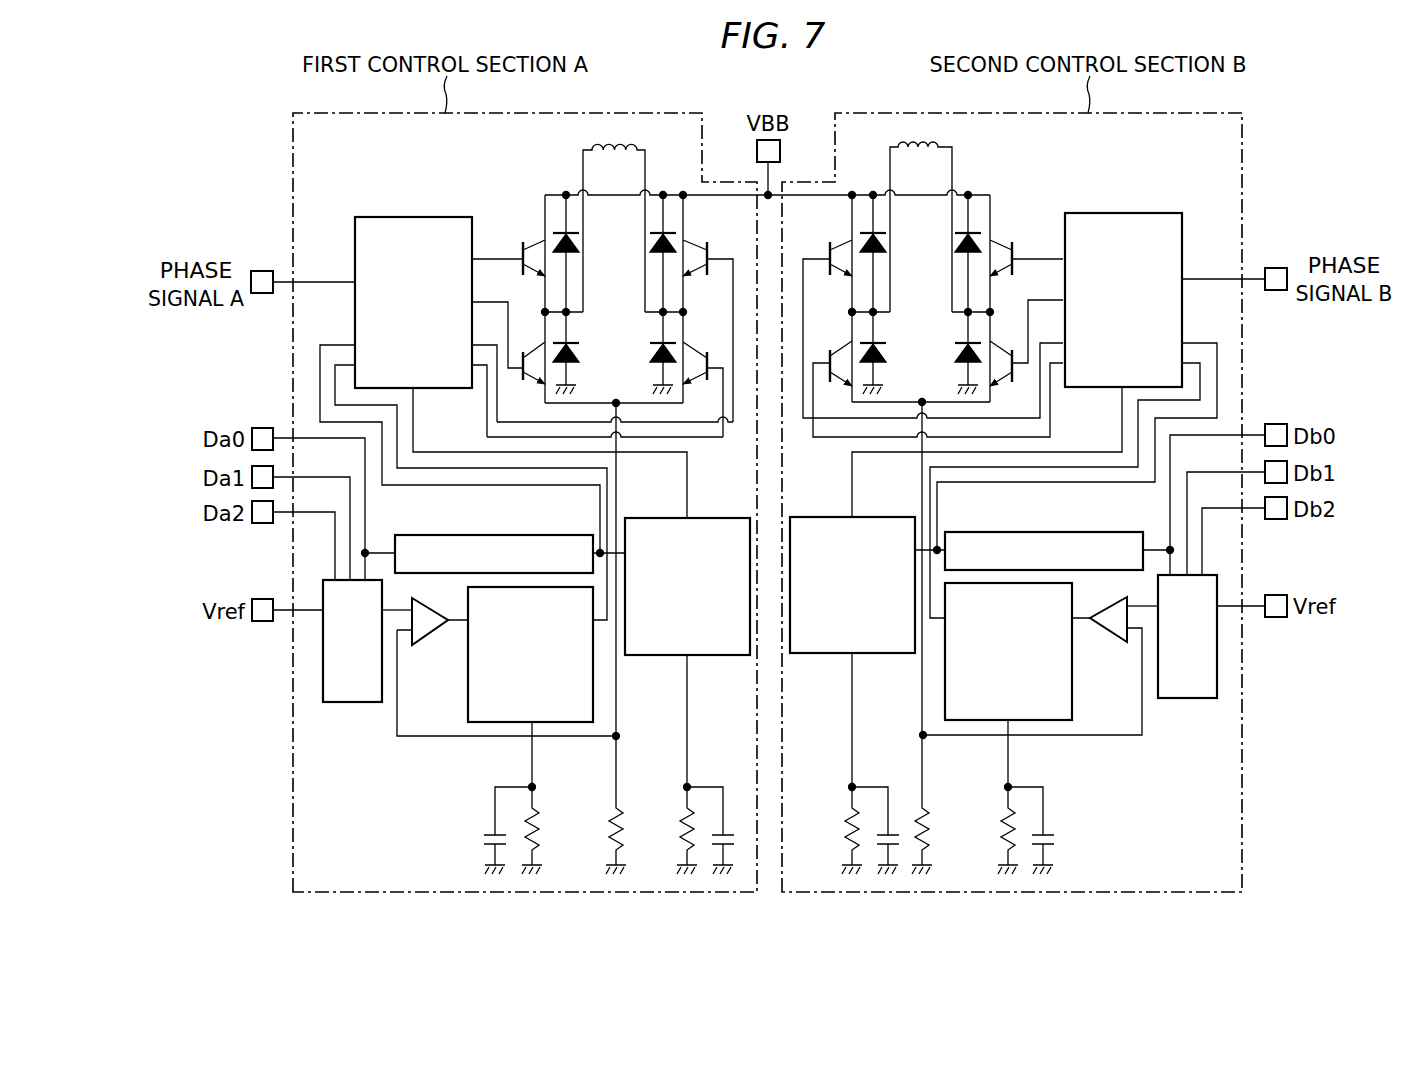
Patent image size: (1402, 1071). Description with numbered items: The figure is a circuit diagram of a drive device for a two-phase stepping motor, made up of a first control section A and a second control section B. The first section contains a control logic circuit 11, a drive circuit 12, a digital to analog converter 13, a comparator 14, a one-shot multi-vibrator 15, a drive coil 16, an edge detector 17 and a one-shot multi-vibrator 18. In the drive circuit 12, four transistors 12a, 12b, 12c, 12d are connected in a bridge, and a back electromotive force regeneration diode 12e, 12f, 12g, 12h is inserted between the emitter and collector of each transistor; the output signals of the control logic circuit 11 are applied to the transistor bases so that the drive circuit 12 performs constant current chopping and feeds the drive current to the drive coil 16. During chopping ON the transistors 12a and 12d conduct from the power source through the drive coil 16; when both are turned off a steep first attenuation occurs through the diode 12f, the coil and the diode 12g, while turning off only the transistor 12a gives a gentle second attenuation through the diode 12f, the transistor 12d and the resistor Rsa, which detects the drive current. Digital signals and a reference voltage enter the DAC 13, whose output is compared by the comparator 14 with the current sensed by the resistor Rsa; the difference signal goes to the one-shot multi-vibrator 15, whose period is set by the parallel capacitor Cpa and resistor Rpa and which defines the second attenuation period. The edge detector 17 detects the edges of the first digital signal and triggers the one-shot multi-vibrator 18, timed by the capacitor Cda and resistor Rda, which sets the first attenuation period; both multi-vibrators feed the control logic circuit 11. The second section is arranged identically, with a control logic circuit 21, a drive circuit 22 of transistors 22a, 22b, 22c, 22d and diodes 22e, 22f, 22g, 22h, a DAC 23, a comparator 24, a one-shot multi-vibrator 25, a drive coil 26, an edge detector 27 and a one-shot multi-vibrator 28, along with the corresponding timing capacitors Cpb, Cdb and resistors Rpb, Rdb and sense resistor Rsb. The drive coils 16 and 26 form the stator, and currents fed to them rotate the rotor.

The control logic circuit 11 is at (412, 217).
The drive circuit 12 is at (534, 218).
The transistor 12a is at (523, 251).
The transistor 12b is at (522, 382).
The transistor 12c is at (710, 248).
The transistor 12d is at (709, 351).
The diode 12e is at (579, 234).
The diode 12f is at (579, 356).
The diode 12g is at (655, 252).
The diode 12h is at (655, 340).
The digital to analog converter 13 is at (352, 704).
The comparator 14 is at (434, 637).
The one-shot multi-vibrator 15 is at (468, 709).
The drive coil 16 is at (590, 146).
The edge detector 17 is at (490, 535).
The one-shot multi-vibrator 18 is at (718, 518).
The control logic circuit 21 is at (1123, 213).
The drive circuit 22 is at (1004, 216).
The transistor 22a is at (830, 248).
The transistor 22b is at (830, 353).
The transistor 22c is at (1012, 249).
The transistor 22d is at (1013, 380).
The diode 22e is at (881, 253).
The diode 22f is at (881, 340).
The diode 22g is at (958, 233).
The diode 22h is at (960, 355).
The digital to analog converter 23 is at (1186, 701).
The comparator 24 is at (1105, 632).
The one-shot multi-vibrator 25 is at (1072, 705).
The drive coil 26 is at (945, 145).
The edge detector 27 is at (1042, 532).
The one-shot multi-vibrator 28 is at (816, 517).
The capacitor Cpa is at (490, 828).
The resistor Rpa is at (541, 824).
The resistor Rsa is at (623, 824).
The resistor Rda is at (678, 832).
The capacitor Cda is at (725, 830).
The capacitor Cdb is at (893, 830).
The resistor Rdb is at (848, 831).
The sense resistor Rsb is at (929, 842).
The resistor Rpb is at (997, 819).
The capacitor Cpb is at (1044, 830).